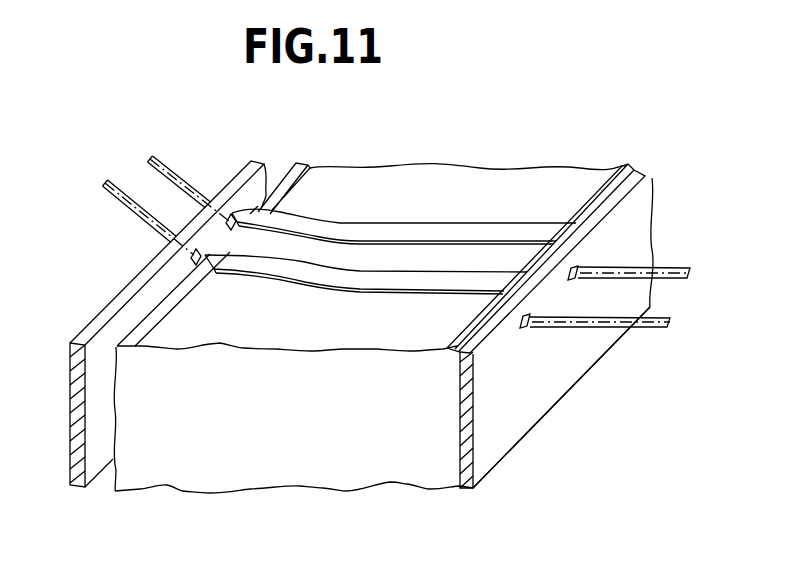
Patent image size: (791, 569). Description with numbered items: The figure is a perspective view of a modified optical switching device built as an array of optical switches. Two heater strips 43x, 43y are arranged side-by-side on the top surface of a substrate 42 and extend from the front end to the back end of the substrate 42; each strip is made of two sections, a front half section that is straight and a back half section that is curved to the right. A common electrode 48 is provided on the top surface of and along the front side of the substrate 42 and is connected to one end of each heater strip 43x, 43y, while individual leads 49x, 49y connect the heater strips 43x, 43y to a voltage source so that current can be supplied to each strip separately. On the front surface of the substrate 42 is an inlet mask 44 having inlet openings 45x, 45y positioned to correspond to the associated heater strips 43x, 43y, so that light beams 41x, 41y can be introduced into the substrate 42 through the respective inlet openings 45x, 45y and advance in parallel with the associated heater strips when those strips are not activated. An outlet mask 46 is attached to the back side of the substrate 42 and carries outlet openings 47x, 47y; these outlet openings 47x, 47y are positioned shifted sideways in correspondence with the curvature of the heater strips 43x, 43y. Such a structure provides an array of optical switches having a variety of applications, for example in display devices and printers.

The light beam 41x is at (626, 329).
The light beam 41y is at (639, 265).
The substrate 42 is at (343, 475).
The heater strip 43x is at (338, 290).
The heater strip 43y is at (413, 222).
The inlet mask 44 is at (518, 428).
The inlet opening 45x is at (520, 328).
The inlet opening 45y is at (568, 280).
The outlet mask 46 is at (72, 417).
The outlet opening 47x is at (192, 263).
The outlet opening 47y is at (232, 211).
The common electrode 48 is at (537, 263).
The lead 49x is at (200, 278).
The lead 49y is at (299, 176).